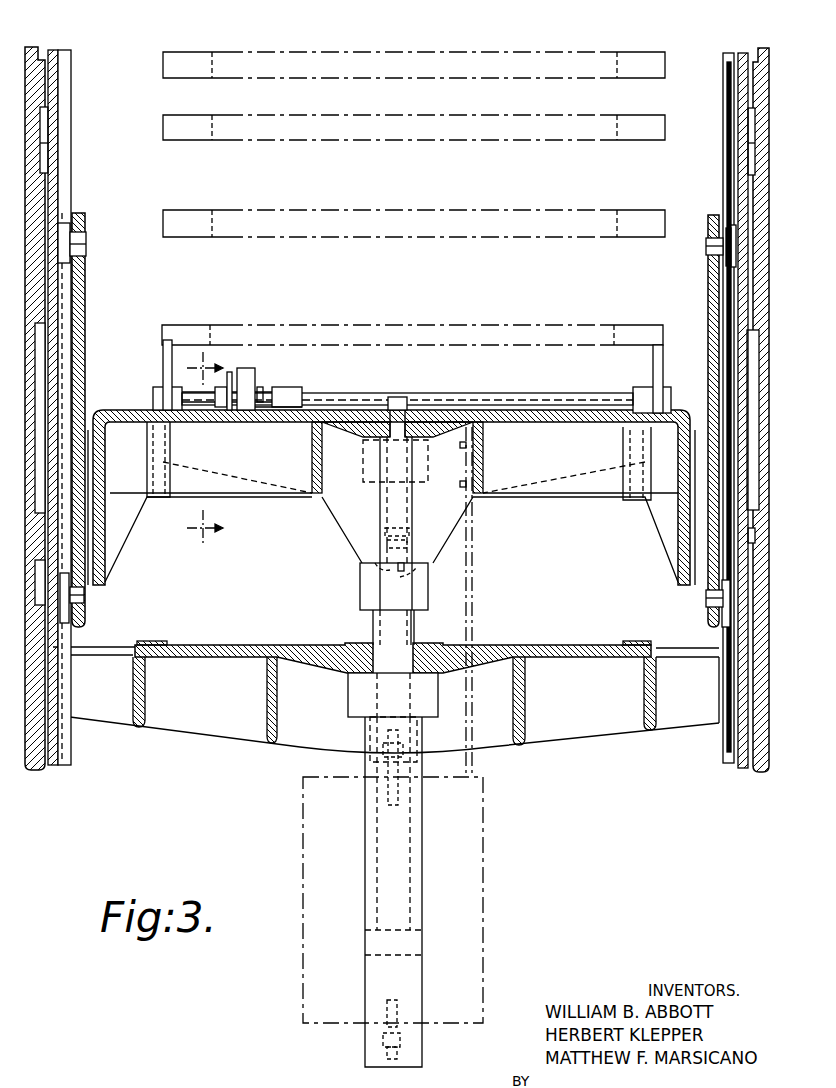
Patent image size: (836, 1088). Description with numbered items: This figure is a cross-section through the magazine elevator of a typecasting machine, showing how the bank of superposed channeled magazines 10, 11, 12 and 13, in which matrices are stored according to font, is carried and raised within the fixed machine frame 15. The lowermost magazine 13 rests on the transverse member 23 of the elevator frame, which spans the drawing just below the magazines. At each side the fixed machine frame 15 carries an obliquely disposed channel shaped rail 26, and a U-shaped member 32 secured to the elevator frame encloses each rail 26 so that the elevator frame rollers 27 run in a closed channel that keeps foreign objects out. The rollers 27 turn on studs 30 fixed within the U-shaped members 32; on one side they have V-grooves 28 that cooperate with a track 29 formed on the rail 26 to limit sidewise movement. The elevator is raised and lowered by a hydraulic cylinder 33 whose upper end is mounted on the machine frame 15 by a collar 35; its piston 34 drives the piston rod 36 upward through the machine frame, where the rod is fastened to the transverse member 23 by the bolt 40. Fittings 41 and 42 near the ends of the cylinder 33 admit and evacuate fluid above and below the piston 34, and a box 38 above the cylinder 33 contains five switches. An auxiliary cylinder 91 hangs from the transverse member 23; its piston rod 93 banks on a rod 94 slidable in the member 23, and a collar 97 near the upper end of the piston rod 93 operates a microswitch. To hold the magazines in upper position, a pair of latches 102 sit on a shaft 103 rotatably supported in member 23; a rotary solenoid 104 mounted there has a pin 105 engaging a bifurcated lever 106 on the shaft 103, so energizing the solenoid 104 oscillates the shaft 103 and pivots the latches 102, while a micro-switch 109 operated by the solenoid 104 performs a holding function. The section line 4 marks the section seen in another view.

The fixed machine frame 15 is at (40, 50).
The channel shaped rails 26 is at (65, 78).
The track 29 is at (728, 78).
The U-shaped members 32 is at (80, 322).
The elevator frame rollers 27 is at (75, 240).
The studs 30 is at (86, 252).
The V-grooves 28 is at (724, 238).
The channeled magazine 10 is at (264, 56).
The channeled magazine 11 is at (245, 121).
The channeled magazine 12 is at (232, 220).
The channeled magazine 13 is at (218, 330).
The transverse member 23 is at (125, 410).
The latches 102 is at (165, 360).
The shaft 103 is at (468, 398).
The section line 4 is at (197, 454).
The pin 105 is at (222, 408).
The bifurcated lever 106 is at (229, 385).
The rotary solenoid 104 is at (248, 376).
The micro-switch 109 is at (296, 392).
The bolt 40 is at (398, 400).
The rod 94 is at (393, 518).
The piston rod 93 is at (378, 568).
The collar 97 is at (425, 570).
The piston rod 36 is at (390, 626).
The cylinder 91 is at (415, 637).
The collar 35 is at (360, 695).
The piston 34 is at (388, 946).
The fitting 41 is at (392, 783).
The box 38 is at (485, 878).
The fitting 42 is at (395, 1016).
The cylinder 33 is at (380, 1043).